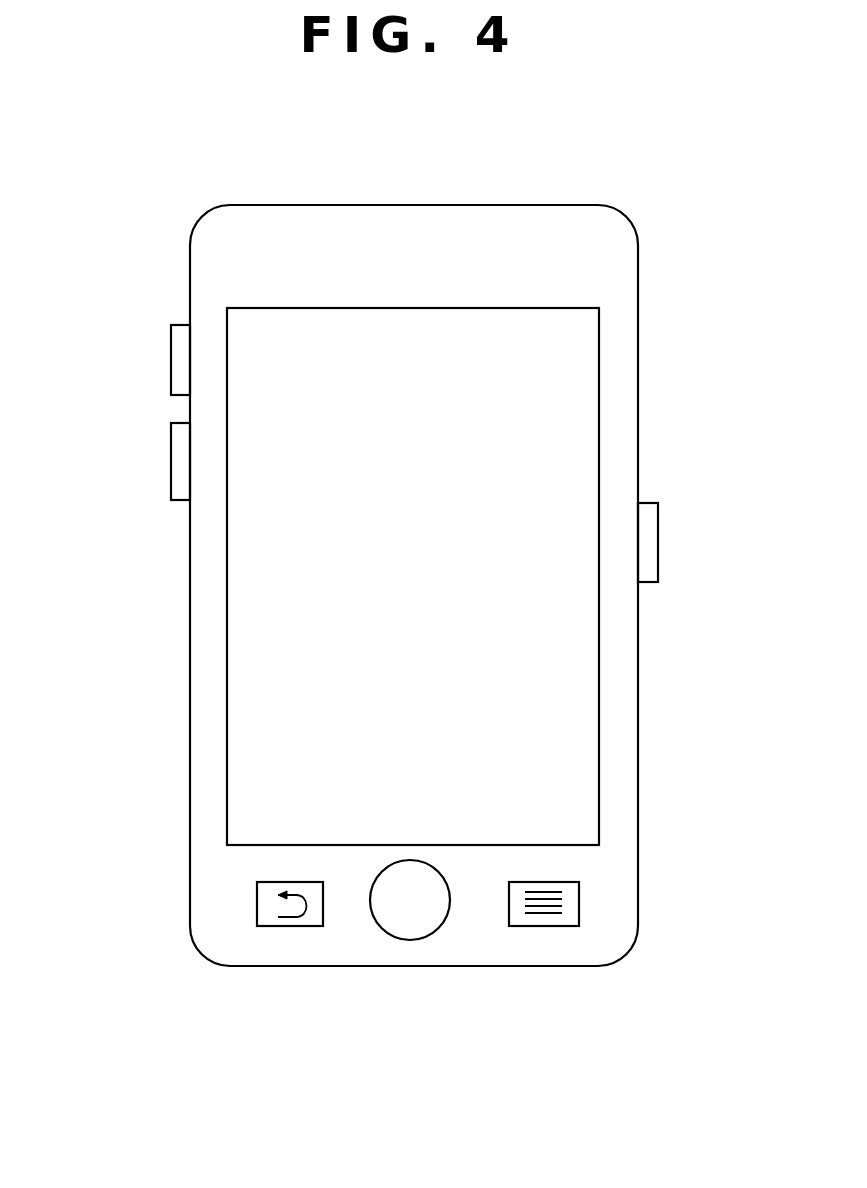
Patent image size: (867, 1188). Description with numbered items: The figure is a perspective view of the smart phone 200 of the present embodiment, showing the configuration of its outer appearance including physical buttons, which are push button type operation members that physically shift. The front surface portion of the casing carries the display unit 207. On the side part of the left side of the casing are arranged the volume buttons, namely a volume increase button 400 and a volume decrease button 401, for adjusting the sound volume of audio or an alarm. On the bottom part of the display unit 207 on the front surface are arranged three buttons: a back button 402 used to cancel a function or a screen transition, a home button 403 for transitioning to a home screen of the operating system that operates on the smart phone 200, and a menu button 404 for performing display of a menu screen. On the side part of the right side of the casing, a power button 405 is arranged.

The smart phone 200 is at (283, 205).
The display unit 207 is at (590, 767).
The volume increase button 400 is at (171, 360).
The volume decrease button 401 is at (171, 460).
The back button 402 is at (288, 926).
The home button 403 is at (410, 940).
The menu button 404 is at (544, 926).
The power button 405 is at (658, 535).